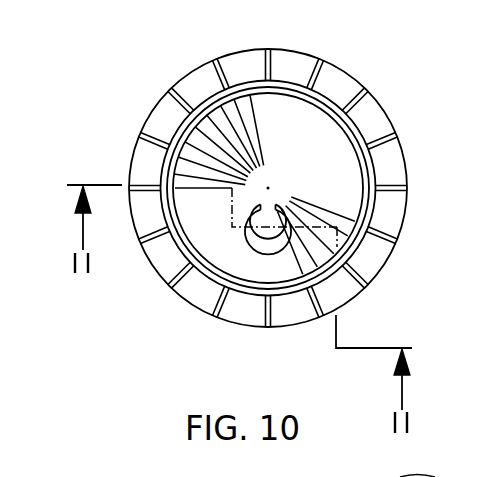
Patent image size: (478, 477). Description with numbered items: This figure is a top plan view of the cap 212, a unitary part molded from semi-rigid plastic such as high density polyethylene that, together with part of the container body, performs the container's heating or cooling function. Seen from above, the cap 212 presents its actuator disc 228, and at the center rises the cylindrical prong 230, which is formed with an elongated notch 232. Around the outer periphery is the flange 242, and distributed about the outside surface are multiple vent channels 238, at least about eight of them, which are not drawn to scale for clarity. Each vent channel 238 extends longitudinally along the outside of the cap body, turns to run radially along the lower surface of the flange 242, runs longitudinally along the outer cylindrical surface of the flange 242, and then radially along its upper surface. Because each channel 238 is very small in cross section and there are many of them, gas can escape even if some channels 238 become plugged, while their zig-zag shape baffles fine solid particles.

The cap 212 is at (391, 274).
The actuator disc 228 is at (350, 168).
The cylindrical prong 230 is at (277, 170).
The elongated notch 232 is at (266, 211).
The vent channels 238 is at (390, 130).
The flange 242 is at (197, 83).